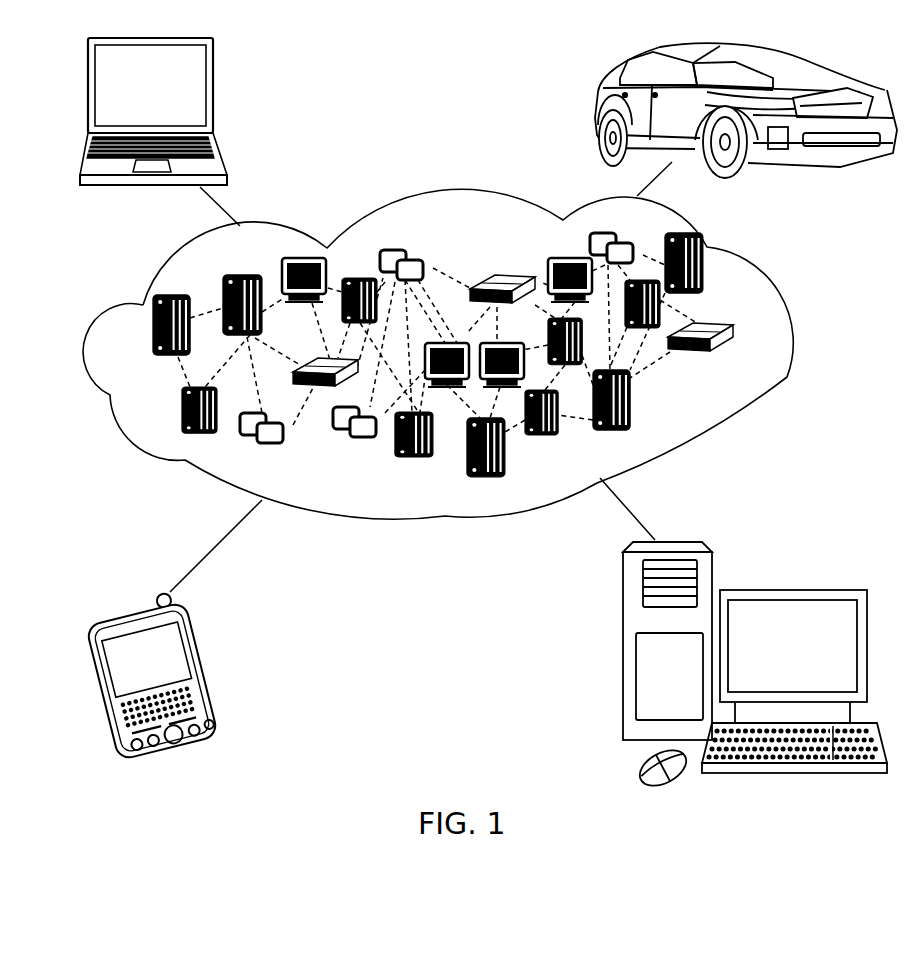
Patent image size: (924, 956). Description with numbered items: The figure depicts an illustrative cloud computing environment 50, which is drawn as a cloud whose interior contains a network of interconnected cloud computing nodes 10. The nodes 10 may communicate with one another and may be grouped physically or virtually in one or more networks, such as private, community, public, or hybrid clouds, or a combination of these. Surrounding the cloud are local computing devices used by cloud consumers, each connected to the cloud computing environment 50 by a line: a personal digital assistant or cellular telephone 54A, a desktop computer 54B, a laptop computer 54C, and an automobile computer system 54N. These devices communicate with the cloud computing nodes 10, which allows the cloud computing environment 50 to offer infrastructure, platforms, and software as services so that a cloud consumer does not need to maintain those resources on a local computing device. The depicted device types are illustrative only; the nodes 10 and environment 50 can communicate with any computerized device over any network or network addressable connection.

The cloud computing nodes 10 is at (740, 364).
The cloud computing environment 50 is at (792, 339).
The personal digital assistant (PDA) or cellular telephone 54A is at (203, 673).
The desktop computer 54B is at (790, 590).
The laptop computer 54C is at (213, 95).
The automobile computer system 54N is at (597, 108).